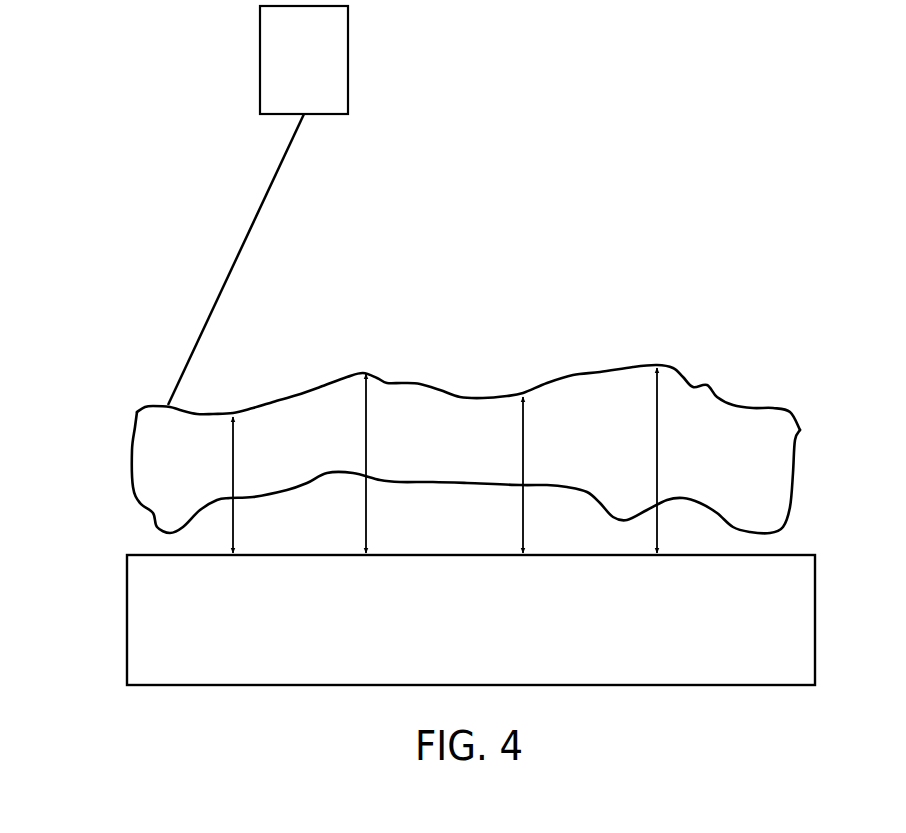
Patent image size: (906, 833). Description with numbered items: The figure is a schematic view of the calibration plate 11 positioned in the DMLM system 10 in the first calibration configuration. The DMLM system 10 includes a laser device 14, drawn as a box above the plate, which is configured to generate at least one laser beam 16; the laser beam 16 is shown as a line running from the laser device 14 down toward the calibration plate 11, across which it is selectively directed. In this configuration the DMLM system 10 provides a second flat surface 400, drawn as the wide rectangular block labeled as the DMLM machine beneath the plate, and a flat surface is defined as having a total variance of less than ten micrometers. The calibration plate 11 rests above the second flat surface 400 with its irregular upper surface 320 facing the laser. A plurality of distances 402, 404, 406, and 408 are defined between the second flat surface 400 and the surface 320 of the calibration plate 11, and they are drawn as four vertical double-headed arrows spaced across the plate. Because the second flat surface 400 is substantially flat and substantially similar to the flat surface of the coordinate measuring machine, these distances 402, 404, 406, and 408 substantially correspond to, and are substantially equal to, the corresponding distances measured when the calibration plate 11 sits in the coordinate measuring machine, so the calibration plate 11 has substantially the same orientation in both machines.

The DMLM system 10 is at (113, 298).
The calibration plate 11 is at (432, 426).
The laser device 14 is at (289, 72).
The laser beam 16 is at (258, 211).
The surface of calibration plate 320 is at (313, 385).
The second flat surface 400 is at (127, 617).
The distance 402 is at (233, 465).
The distance 404 is at (367, 447).
The distance 406 is at (523, 455).
The distance 408 is at (657, 452).